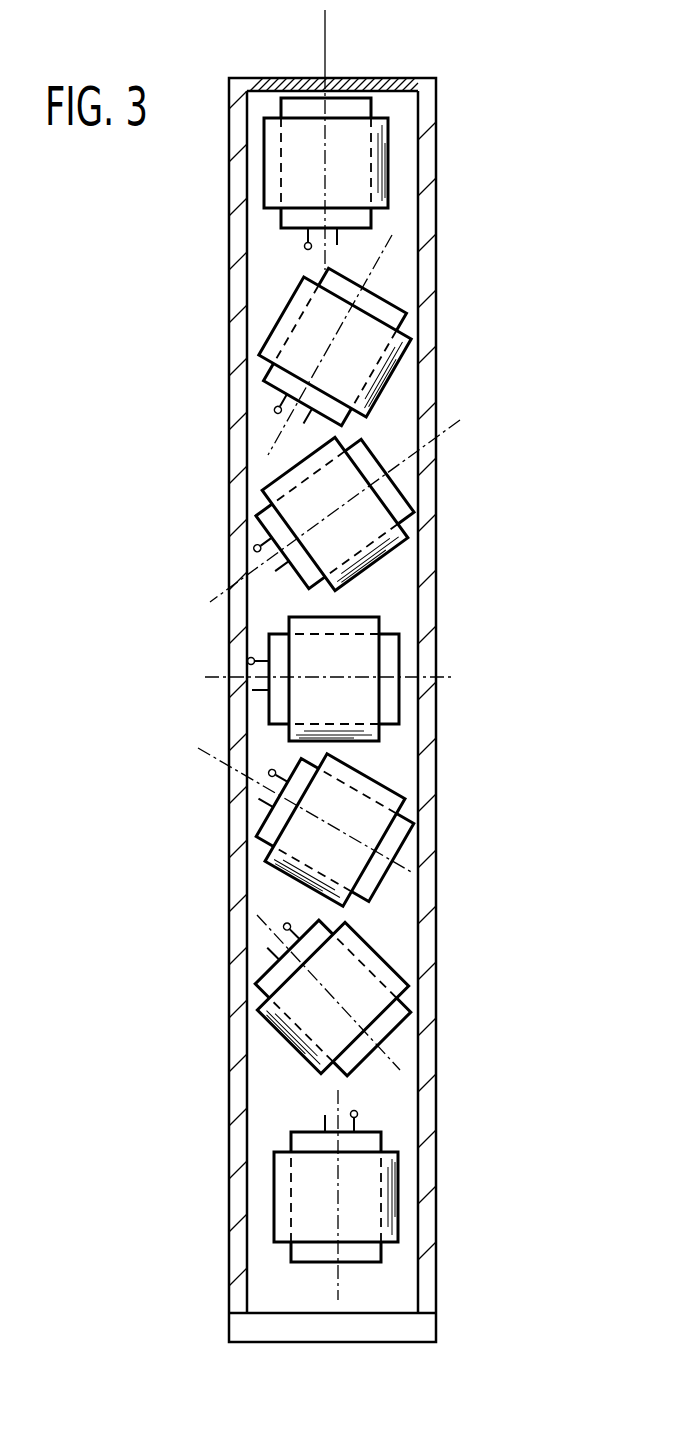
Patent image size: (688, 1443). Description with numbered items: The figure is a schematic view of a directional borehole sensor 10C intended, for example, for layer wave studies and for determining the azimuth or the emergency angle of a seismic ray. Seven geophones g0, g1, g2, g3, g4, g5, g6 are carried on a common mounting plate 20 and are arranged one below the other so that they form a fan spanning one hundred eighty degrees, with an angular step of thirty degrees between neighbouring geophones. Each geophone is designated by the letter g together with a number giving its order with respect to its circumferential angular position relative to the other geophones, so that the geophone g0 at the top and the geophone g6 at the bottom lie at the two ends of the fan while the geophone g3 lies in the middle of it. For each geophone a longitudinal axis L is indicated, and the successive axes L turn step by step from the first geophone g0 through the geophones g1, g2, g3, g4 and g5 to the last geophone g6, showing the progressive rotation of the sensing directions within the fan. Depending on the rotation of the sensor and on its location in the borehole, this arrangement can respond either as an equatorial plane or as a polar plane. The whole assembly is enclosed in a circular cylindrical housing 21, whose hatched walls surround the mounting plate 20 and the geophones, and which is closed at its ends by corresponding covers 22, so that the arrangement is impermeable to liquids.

The borehole sensor 10C is at (345, 703).
The mounting plate 20 is at (405, 208).
The circular cylindrical housing 21 is at (452, 731).
The cover 22 is at (327, 78).
The longitudinal axis L is at (320, 23).
The geophone g0 is at (326, 174).
The geophone g1 is at (329, 356).
The geophone g2 is at (326, 520).
The geophone g3 is at (324, 679).
The geophone g4 is at (325, 824).
The geophone g5 is at (325, 990).
The geophone g6 is at (336, 1187).